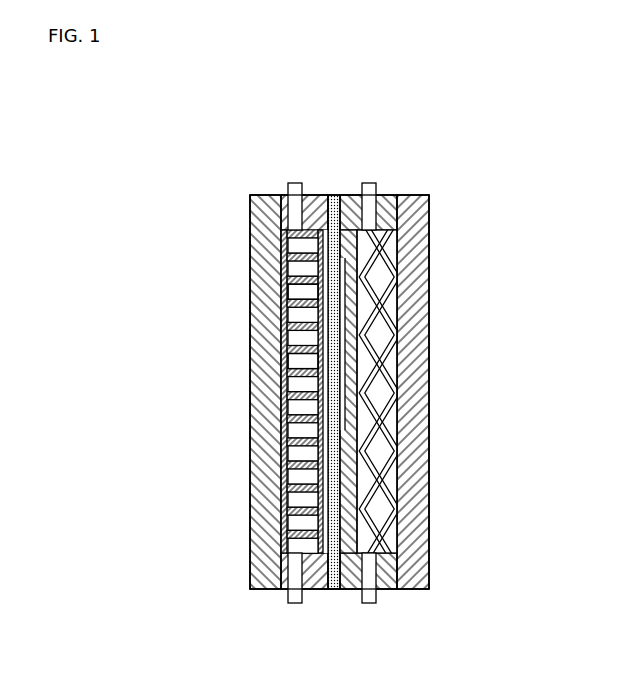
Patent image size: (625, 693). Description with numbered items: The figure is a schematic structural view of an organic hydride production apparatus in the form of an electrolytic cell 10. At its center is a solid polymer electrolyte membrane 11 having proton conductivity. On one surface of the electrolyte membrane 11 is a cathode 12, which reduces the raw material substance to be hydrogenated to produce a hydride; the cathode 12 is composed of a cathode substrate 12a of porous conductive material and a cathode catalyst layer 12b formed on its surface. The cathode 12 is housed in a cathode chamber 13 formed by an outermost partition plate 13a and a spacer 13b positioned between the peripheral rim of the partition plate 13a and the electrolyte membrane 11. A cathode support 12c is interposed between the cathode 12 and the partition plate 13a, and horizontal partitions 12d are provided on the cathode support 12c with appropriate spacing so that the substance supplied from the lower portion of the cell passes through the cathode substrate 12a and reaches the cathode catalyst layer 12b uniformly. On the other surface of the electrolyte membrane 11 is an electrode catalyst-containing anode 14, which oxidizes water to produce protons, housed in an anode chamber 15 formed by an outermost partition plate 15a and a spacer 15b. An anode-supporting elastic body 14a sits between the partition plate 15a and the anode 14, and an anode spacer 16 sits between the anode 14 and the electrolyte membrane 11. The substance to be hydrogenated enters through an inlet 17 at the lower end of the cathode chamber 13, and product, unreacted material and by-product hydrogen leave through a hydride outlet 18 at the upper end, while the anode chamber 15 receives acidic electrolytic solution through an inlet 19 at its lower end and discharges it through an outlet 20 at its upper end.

The electrolytic cell 10 is at (441, 148).
The solid polymer electrolyte membrane 11 is at (331, 195).
The cathode 12 is at (240, 391).
The cathode substrate 12a is at (300, 314).
The cathode catalyst layer 12b is at (300, 290).
The cathode support 12c is at (284, 392).
The partitions 12d is at (295, 350).
The cathode chamber 13 is at (250, 394).
The partition plate 13a is at (260, 432).
The spacer 13b is at (309, 195).
The anode 14 is at (419, 393).
The anode-supporting elastic body 14a is at (352, 372).
The anode chamber 15 is at (430, 397).
The partition plate 15a is at (429, 418).
The spacer 15b is at (381, 195).
The anode spacer 16 is at (392, 466).
The inlet 17 is at (293, 604).
The hydride outlet 18 is at (291, 183).
The acidic electrolytic solution inlet 19 is at (365, 604).
The acidic electrolytic solution outlet 20 is at (369, 183).